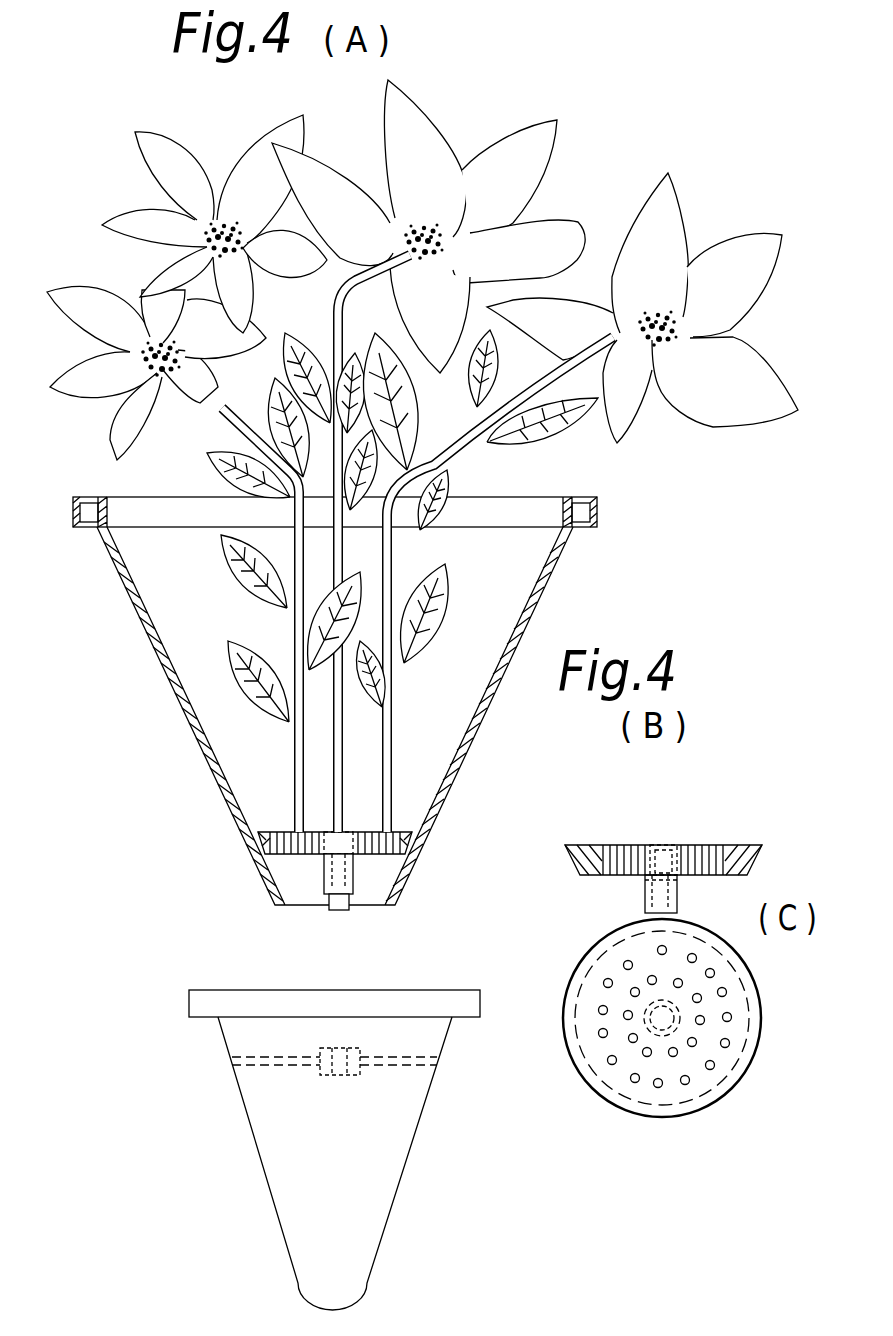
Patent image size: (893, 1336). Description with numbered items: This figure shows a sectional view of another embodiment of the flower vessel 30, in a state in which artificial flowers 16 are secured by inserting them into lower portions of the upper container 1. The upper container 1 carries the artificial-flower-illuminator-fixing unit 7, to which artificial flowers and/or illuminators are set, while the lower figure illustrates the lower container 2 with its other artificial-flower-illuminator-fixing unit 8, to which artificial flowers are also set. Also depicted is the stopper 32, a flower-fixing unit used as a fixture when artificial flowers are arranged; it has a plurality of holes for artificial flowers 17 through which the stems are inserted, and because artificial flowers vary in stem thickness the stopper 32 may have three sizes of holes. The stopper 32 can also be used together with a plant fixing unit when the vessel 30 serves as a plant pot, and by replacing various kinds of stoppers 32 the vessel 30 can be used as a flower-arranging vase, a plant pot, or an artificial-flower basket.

In FIG. 4A, the upper container 1 is at (205, 749).
In FIG. 4A, the lower container 2 is at (267, 1183).
In FIG. 4A, the artificial-flower-illuminator-fixing unit 7 is at (581, 497).
In FIG. 4A, the artificial-flower-illuminator-fixing unit 8 is at (333, 992).
In FIG. 4A, the artificial flowers 16 is at (663, 203).
In FIG. 4B, the holes for artificial flowers 17 is at (635, 845).
In FIG. 4C, the holes for artificial flowers 17 is at (714, 1067).
In FIG. 4A, the flower vessel 30 is at (405, 456).
In FIG. 4B, the stopper 32 is at (657, 809).
In FIG. 4C, the stopper 32 is at (705, 1018).